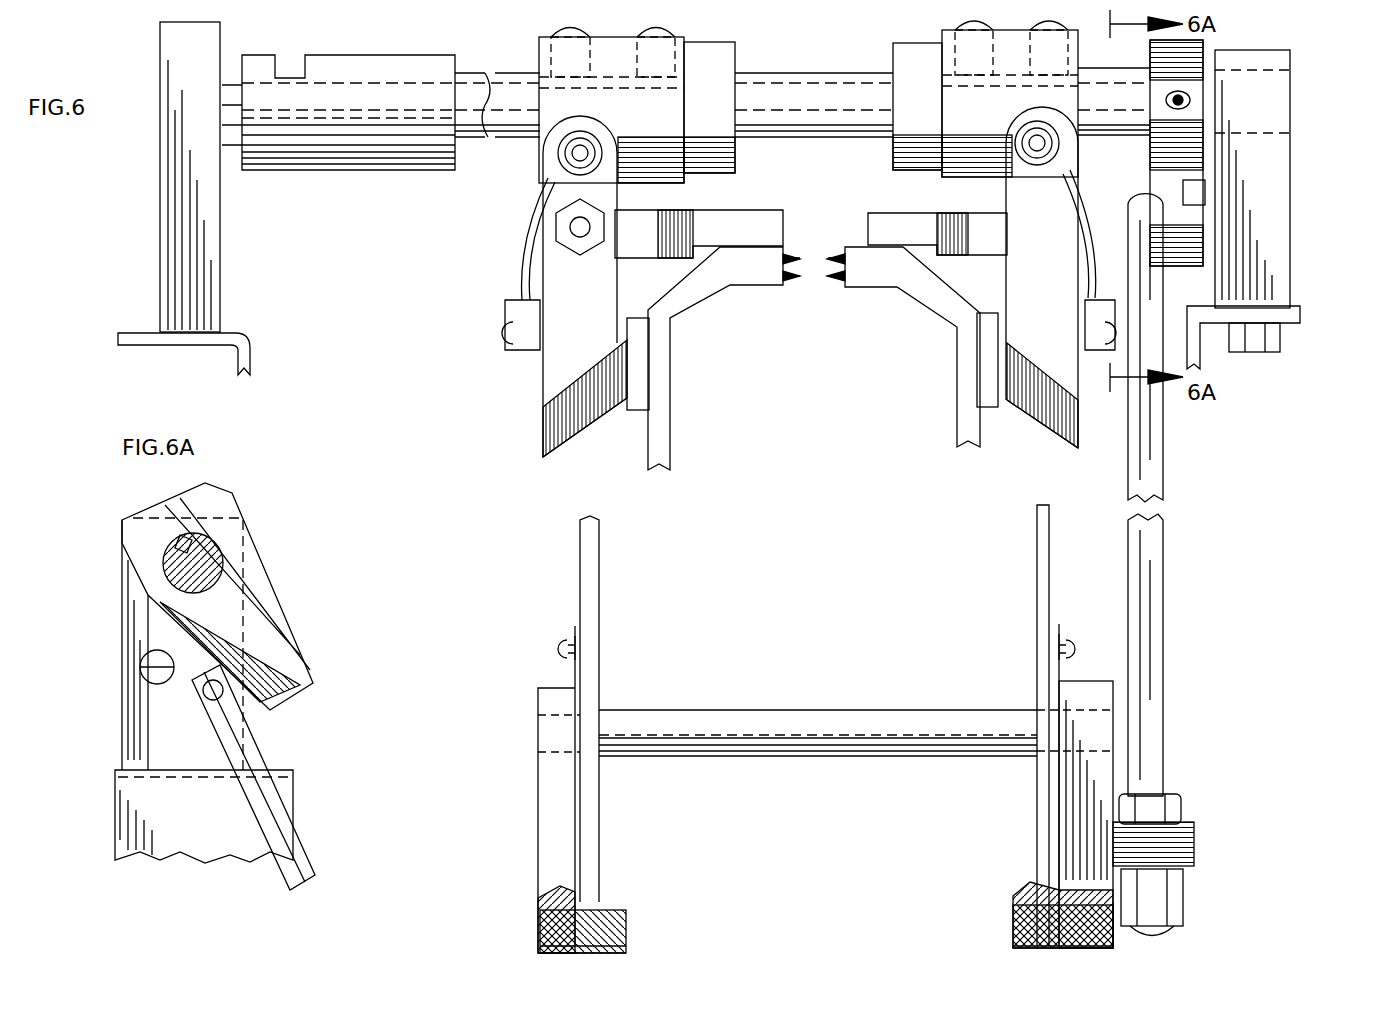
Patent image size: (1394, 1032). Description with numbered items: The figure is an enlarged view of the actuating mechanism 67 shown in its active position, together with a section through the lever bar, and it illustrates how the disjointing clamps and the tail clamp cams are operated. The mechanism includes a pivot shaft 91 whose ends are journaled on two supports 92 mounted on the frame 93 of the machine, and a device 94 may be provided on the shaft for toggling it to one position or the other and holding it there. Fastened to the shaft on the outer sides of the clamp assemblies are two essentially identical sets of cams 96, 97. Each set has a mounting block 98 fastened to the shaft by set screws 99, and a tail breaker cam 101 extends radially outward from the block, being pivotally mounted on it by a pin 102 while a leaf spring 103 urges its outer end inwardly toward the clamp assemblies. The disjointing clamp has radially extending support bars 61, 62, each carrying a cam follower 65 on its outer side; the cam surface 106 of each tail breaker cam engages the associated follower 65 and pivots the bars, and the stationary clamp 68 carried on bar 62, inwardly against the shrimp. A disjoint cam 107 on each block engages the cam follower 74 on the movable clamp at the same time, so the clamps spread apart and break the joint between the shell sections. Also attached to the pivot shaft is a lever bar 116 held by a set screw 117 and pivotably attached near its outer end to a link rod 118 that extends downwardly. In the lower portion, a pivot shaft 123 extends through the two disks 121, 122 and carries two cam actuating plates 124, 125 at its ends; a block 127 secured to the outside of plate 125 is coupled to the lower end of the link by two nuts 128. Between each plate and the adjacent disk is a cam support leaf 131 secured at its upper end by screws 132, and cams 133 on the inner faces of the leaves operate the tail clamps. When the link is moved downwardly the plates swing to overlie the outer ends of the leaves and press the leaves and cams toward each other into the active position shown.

In FIG. 6, the support bar 61 is at (668, 452).
In FIG. 6, the support bar 62 is at (958, 418).
In FIG. 6, the cam follower 65 is at (640, 430).
In FIG. 6, the actuating mechanism 67 is at (498, 318).
In FIG. 6, the stationary clamp 68 is at (835, 280).
In FIG. 6, the cam follower 74 is at (745, 225).
In FIG. 6, the pivot shaft 91 is at (793, 95).
In FIG. 6A, the pivot shaft 91 is at (210, 565).
In FIG. 6, the support 92 is at (170, 190).
In FIG. 6A, the support 92 is at (122, 700).
In FIG. 6, the frame 93 is at (130, 340).
In FIG. 6, the toggling device 94 is at (310, 158).
In FIG. 6, the set of cams 96 is at (522, 372).
In FIG. 6, the set of cams 97 is at (1096, 420).
In FIG. 6, the mounting block 98 is at (540, 45).
In FIG. 6, the set screw 99 is at (808, 54).
In FIG. 6, the tail breaker cam 101 is at (590, 430).
In FIG. 6, the pin 102 is at (575, 153).
In FIG. 6, the leaf spring 103 is at (520, 275).
In FIG. 6, the cam surface 106 is at (550, 432).
In FIG. 6, the disjoint cam 107 is at (660, 225).
In FIG. 6, the lever bar 116 is at (1190, 45).
In FIG. 6A, the lever bar 116 is at (300, 645).
In FIG. 6, the set screw 117 is at (1190, 102).
In FIG. 6, the link rod 118 is at (1160, 620).
In FIG. 6A, the link rod 118 is at (262, 735).
In FIG. 6, the disk 121 is at (593, 566).
In FIG. 6, the disk 122 is at (1037, 555).
In FIG. 6, the pivot shaft 123 is at (835, 735).
In FIG. 6, the cam actuating plate 124 is at (548, 815).
In FIG. 6, the cam actuating plate 125 is at (1097, 775).
In FIG. 6, the block 127 is at (1190, 848).
In FIG. 6, the nut 128 is at (1178, 815).
In FIG. 6, the cam support leaf 131 is at (582, 792).
In FIG. 6, the screw 132 is at (565, 648).
In FIG. 6, the cam 133 is at (620, 915).